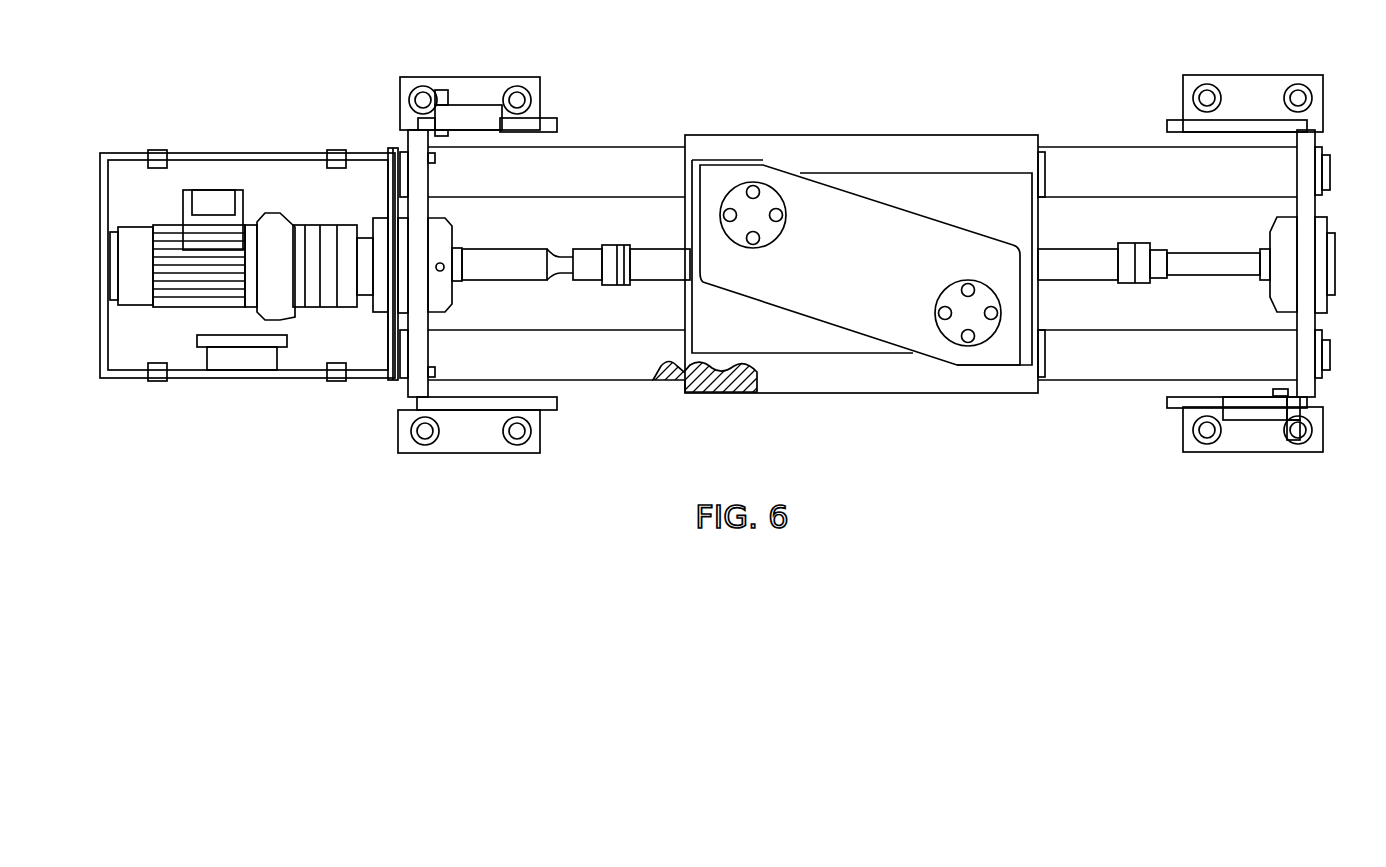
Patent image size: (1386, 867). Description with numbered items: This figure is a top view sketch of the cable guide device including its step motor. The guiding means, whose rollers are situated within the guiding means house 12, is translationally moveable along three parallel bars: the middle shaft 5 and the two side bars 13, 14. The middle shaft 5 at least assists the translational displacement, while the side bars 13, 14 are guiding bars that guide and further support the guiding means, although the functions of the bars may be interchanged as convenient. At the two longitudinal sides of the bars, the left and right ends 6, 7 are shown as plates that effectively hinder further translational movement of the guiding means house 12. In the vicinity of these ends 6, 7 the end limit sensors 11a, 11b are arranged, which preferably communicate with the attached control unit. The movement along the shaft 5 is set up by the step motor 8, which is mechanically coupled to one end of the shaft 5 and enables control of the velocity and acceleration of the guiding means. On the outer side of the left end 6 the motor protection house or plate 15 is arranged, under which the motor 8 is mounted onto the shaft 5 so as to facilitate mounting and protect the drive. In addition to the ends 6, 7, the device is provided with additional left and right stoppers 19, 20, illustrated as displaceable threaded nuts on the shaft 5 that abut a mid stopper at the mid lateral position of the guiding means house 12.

The shaft 5 is at (508, 248).
The left end stopper 6 is at (407, 140).
The right end stopper 7 is at (1308, 208).
The step motor 8 is at (133, 226).
The end limit sensor 11a is at (408, 53).
The end limit sensor 11b is at (1282, 432).
The guiding means house 12 is at (943, 135).
The side bar 13 is at (593, 382).
The side bar 14 is at (595, 147).
The motor protection house 15 is at (237, 156).
The left stopper 19 is at (618, 243).
The right stopper 20 is at (1137, 243).